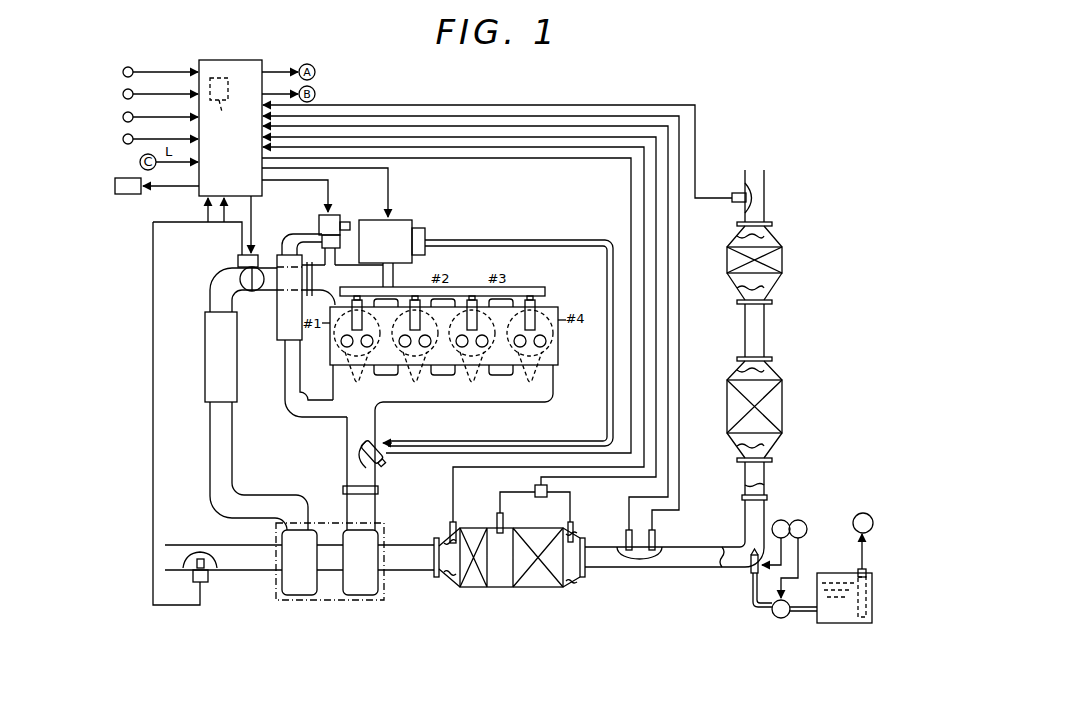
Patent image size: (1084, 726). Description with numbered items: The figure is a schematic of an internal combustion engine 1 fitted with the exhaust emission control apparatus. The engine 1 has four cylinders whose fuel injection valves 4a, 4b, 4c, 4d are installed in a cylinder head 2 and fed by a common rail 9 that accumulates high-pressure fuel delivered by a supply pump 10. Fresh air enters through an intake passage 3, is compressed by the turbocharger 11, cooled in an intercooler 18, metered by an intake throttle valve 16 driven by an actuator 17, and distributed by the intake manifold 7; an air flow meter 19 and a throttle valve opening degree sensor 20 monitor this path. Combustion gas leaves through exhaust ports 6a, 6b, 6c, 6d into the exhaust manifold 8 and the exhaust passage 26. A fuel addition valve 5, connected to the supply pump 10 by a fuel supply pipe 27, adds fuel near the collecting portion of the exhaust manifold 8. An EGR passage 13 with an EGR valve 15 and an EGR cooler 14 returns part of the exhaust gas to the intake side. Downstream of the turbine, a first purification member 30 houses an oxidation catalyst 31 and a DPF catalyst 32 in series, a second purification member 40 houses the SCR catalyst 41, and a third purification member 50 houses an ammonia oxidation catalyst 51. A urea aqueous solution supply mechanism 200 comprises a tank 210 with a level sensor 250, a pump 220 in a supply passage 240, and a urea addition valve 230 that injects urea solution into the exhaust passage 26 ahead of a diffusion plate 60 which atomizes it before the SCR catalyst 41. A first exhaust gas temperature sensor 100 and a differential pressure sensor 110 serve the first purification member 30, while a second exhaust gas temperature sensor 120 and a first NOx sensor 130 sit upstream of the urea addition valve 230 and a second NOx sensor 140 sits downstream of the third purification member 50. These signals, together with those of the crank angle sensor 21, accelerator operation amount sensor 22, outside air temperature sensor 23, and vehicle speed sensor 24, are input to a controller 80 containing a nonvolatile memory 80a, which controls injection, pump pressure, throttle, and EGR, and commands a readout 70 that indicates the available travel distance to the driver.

The engine 1 is at (566, 347).
The cylinder head 2 is at (330, 356).
The intake passage 3 is at (208, 303).
The fuel injection valve 4a is at (357, 297).
The fuel injection valve 4b is at (415, 297).
The fuel injection valve 4c is at (472, 297).
The fuel injection valve 4d is at (530, 297).
The fuel addition valve 5 is at (382, 459).
The exhaust port 6a is at (357, 356).
The exhaust port 6b is at (415, 356).
The exhaust port 6c is at (472, 356).
The exhaust port 6d is at (530, 356).
The intake manifold 7 is at (546, 291).
The exhaust manifold 8 is at (503, 403).
The common rail 9 is at (483, 286).
The supply pump 10 is at (400, 219).
The turbocharger 11 is at (326, 522).
The EGR passage 13 is at (284, 390).
The EGR cooler 14 is at (277, 320).
The EGR valve 15 is at (338, 214).
The intake throttle valve 16 is at (240, 278).
The actuator 17 is at (257, 254).
The intercooler 18 is at (205, 358).
The air flow meter 19 is at (210, 578).
The throttle valve opening degree sensor 20 is at (238, 261).
The crank angle sensor 21 is at (122, 72).
The accelerator operation amount sensor 22 is at (122, 94).
The outside air temperature sensor 23 is at (122, 117).
The vehicle speed sensor 24 is at (122, 139).
The exhaust passage 26 is at (377, 512).
The fuel supply pipe 27 is at (533, 239).
The first purification member 30 is at (500, 588).
The oxidation catalyst 31 is at (474, 588).
The DPF catalyst 32 is at (536, 588).
The second purification member 40 is at (782, 415).
The SCR catalyst 41 is at (783, 398).
The third purification member 50 is at (781, 291).
The ammonia oxidation catalyst 51 is at (783, 266).
The diffusion plate 60 is at (767, 498).
The readout 70 is at (128, 195).
The controller 80 is at (263, 191).
The nonvolatile memory 80a is at (222, 108).
The first exhaust gas temperature sensor 100 is at (457, 526).
The differential pressure sensor 110 is at (534, 491).
The second exhaust gas temperature sensor 120 is at (625, 536).
The first NOx sensor 130 is at (657, 536).
The second NOx sensor 140 is at (737, 193).
The urea aqueous solution supply mechanism 200 is at (836, 565).
The tank 210 is at (872, 621).
The pump 220 is at (784, 620).
The urea addition valve 230 is at (749, 568).
The supply passage 240 is at (752, 597).
The level sensor 250 is at (866, 574).